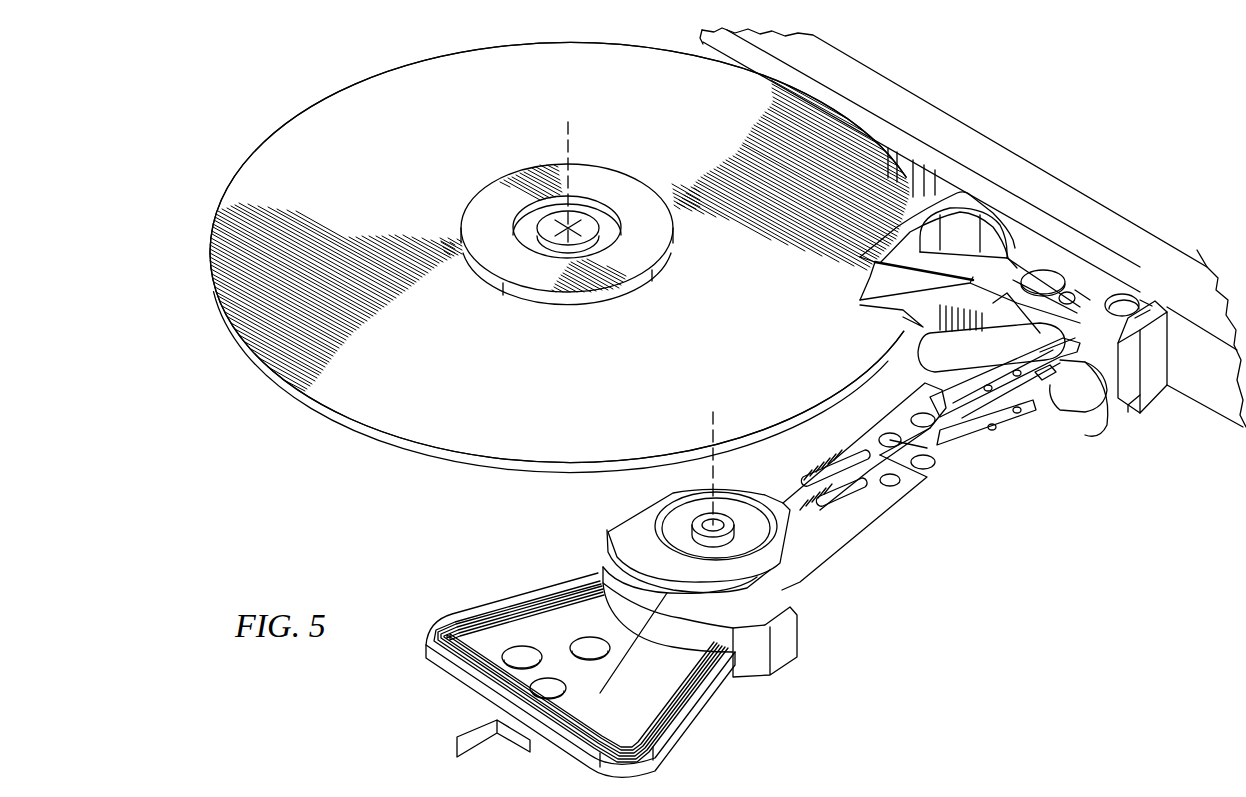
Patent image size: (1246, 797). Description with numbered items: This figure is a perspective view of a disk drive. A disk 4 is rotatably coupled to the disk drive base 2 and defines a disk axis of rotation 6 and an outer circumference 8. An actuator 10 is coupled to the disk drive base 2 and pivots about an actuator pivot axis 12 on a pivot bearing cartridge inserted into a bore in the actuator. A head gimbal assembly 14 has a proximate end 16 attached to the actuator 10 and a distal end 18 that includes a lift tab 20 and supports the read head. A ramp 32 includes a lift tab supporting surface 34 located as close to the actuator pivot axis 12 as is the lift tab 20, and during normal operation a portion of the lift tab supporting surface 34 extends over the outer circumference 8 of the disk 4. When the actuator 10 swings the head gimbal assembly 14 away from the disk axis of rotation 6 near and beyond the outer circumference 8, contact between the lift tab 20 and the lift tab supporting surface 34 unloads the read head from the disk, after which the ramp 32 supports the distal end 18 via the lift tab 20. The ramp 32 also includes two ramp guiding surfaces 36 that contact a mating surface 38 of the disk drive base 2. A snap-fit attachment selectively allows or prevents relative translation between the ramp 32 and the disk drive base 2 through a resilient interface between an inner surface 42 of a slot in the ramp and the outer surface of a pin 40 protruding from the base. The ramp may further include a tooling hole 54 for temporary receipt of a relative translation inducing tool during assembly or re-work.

The disk drive base 2 is at (847, 61).
The disk 4 is at (579, 390).
The disk axis of rotation 6 is at (569, 133).
The outer circumference 8 is at (316, 105).
The actuator 10 is at (858, 441).
The actuator pivot axis 12 is at (712, 415).
The head gimbal assembly 14 is at (1042, 376).
The proximate end 16 is at (933, 384).
The distal end 18 is at (1020, 346).
The lift tab 20 is at (1107, 403).
The ramp 32 is at (1145, 305).
The lift tab supporting surface 34 is at (1122, 302).
The ramp guiding surfaces 36 is at (995, 202).
The mating surface 38 is at (1214, 383).
The pin 40 is at (1083, 296).
The inner surface 42 is at (1050, 276).
The tooling hole 54 is at (1137, 308).